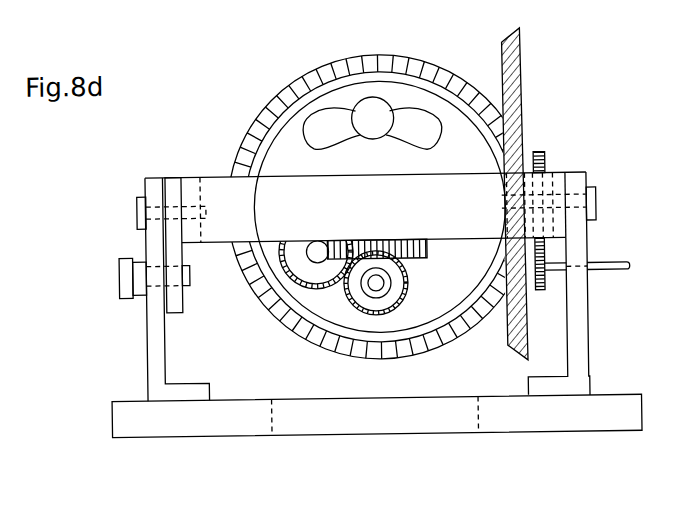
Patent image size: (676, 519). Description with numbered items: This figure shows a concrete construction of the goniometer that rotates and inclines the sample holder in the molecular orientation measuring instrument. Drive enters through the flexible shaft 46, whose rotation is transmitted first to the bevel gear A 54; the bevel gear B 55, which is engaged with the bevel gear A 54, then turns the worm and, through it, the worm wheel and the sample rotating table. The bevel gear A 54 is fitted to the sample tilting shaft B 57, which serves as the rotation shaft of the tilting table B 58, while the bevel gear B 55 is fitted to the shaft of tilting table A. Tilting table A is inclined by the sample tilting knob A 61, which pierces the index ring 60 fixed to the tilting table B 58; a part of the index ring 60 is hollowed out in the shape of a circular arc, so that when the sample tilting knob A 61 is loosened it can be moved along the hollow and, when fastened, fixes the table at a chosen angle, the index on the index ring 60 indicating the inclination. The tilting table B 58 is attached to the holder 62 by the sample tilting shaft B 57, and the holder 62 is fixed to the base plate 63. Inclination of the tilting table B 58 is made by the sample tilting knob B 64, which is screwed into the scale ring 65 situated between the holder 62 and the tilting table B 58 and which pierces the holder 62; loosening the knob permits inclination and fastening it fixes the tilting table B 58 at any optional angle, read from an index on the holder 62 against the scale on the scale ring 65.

The flexible shaft 46 is at (619, 274).
The bevel gear A 54 is at (518, 68).
The bevel gear B 55 is at (302, 80).
The sample tilting shaft B 57 is at (137, 210).
The tilting table B 58 is at (562, 176).
The index ring 60 is at (402, 92).
The sample tilting knob A 61 is at (375, 104).
The holder 62 is at (582, 181).
The base plate 63 is at (176, 434).
The sample tilting knob B 64 is at (121, 274).
The scale ring 65 is at (177, 175).